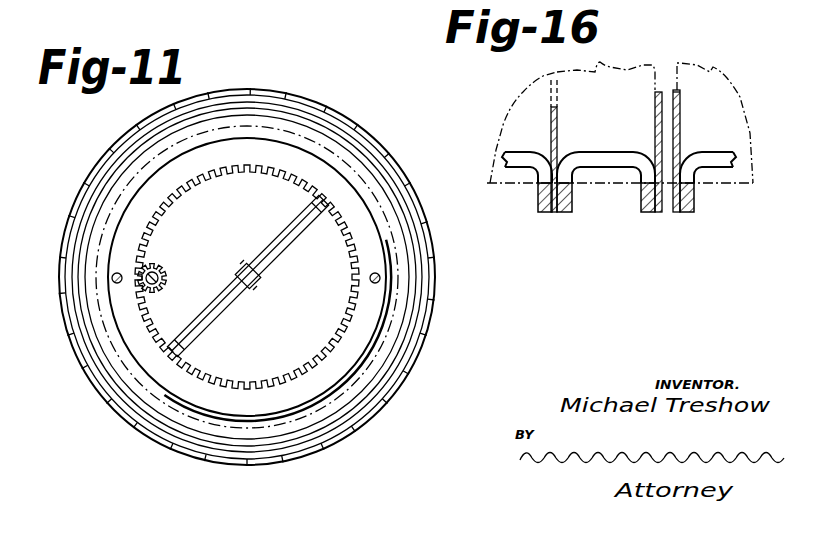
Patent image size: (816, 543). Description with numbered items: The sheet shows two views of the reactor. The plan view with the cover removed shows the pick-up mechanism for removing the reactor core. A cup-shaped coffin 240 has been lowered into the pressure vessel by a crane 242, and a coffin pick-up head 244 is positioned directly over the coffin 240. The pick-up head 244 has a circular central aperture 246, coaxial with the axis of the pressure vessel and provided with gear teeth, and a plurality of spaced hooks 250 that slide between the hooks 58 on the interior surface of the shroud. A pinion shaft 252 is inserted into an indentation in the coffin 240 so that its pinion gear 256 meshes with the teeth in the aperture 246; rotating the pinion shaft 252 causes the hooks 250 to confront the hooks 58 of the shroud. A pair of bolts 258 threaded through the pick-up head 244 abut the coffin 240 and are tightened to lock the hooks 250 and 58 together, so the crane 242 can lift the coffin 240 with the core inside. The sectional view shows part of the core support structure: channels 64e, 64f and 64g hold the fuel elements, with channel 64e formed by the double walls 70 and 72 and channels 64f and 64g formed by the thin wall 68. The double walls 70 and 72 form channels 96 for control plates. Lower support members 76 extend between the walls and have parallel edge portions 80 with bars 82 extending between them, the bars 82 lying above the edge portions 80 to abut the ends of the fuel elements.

In FIG. 11, the hooks 58 is at (290, 97).
In FIG. 11, the hooks 250 is at (338, 123).
In FIG. 11, the coffin pick-up head 244 is at (357, 158).
In FIG. 11, the circular central aperture 246 is at (273, 170).
In FIG. 11, the cup-shaped coffin 240 is at (240, 247).
In FIG. 11, the pinion shaft 252 is at (167, 270).
In FIG. 11, the pinion gear 256 is at (160, 293).
In FIG. 11, the crane 242 is at (285, 257).
In FIG. 11, the bolts 258 is at (112, 277).
In FIG. 16, the channel 64g is at (543, 80).
In FIG. 16, the channel 64f is at (598, 64).
In FIG. 16, the channel 64e is at (713, 70).
In FIG. 16, the lower support members 76 is at (610, 169).
In FIG. 16, the thin wall 68 is at (558, 118).
In FIG. 16, the double wall 72 is at (655, 134).
In FIG. 16, the double wall 70 is at (680, 133).
In FIG. 16, the channels 96 is at (673, 107).
In FIG. 16, the edge portions 80 is at (647, 211).
In FIG. 16, the bars 82 is at (631, 168).